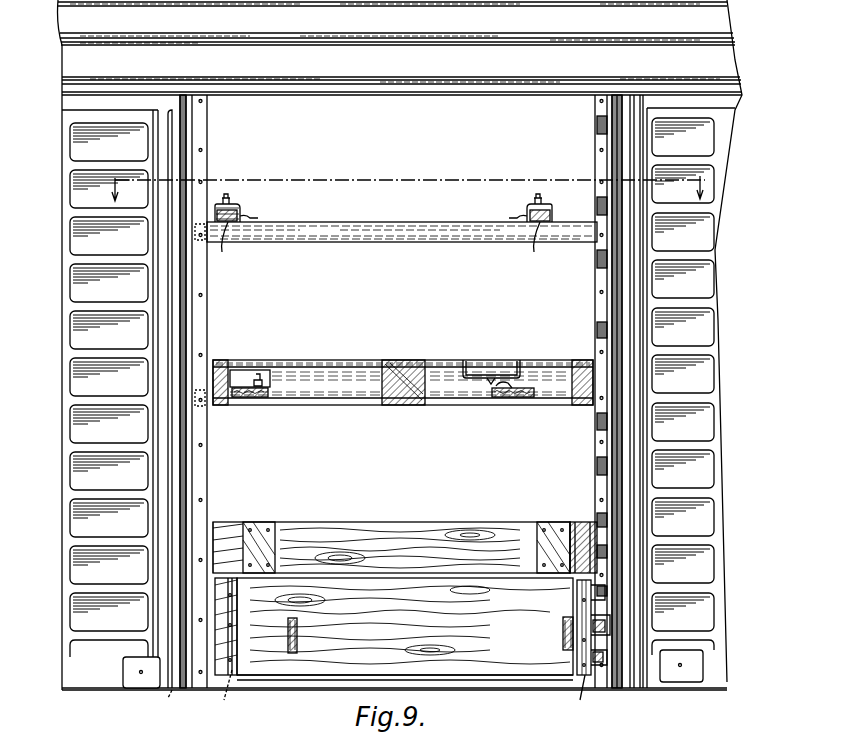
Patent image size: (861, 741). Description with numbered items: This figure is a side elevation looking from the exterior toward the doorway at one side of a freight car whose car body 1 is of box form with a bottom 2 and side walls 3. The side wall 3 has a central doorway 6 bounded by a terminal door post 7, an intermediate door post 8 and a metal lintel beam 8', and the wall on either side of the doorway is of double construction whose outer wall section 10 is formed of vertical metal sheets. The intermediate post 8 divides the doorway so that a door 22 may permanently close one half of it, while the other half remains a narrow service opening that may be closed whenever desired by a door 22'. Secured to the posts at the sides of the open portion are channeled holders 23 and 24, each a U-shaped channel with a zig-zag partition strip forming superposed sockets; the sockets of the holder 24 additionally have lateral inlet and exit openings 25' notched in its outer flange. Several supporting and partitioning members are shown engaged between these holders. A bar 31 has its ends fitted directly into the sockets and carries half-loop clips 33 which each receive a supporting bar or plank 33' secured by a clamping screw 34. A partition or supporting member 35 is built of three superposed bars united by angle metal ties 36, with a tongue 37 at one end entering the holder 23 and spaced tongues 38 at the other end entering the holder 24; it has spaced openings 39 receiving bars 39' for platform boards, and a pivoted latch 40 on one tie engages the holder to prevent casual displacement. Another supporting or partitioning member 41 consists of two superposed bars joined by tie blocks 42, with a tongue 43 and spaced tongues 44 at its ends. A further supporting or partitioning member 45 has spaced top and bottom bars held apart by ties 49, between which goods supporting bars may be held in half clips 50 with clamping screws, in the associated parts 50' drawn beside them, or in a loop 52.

The car body 1 is at (78, 62).
The bottom 2 is at (228, 680).
The side wall 3 is at (70, 95).
The doorway 6 is at (401, 390).
The terminal door post 7 is at (612, 143).
The intermediate door post 8 is at (212, 391).
The lintel beam 8' is at (297, 391).
The outer wall section 10 is at (409, 184).
The door 22 is at (91, 399).
The door 22' is at (701, 398).
The channeled holder 23 is at (206, 320).
The channeled holder 24 is at (600, 283).
The lateral inlet and exit openings 25' is at (573, 356).
The bar 31 is at (388, 230).
The clip 33 is at (396, 203).
The supporting bar or plank 33' is at (380, 421).
The clamping screw 34 is at (226, 194).
The partition or supporting member 35 is at (378, 630).
The angle metal tie 36 is at (218, 690).
The tongue 37 is at (168, 692).
The spaced tongues 38 is at (605, 645).
The openings 39 is at (410, 668).
The bars 39' is at (429, 668).
The pivoted latch 40 is at (580, 660).
The supporting or partitioning member 41 is at (420, 522).
The tie block 42 is at (260, 524).
The tongue 43 is at (226, 525).
The spaced tongues 44 is at (600, 545).
The supporting or partitioning member 45 is at (400, 360).
The tie 49 is at (410, 405).
The half clip 50 is at (383, 382).
The spring 50' is at (383, 412).
The loop 52 is at (485, 360).